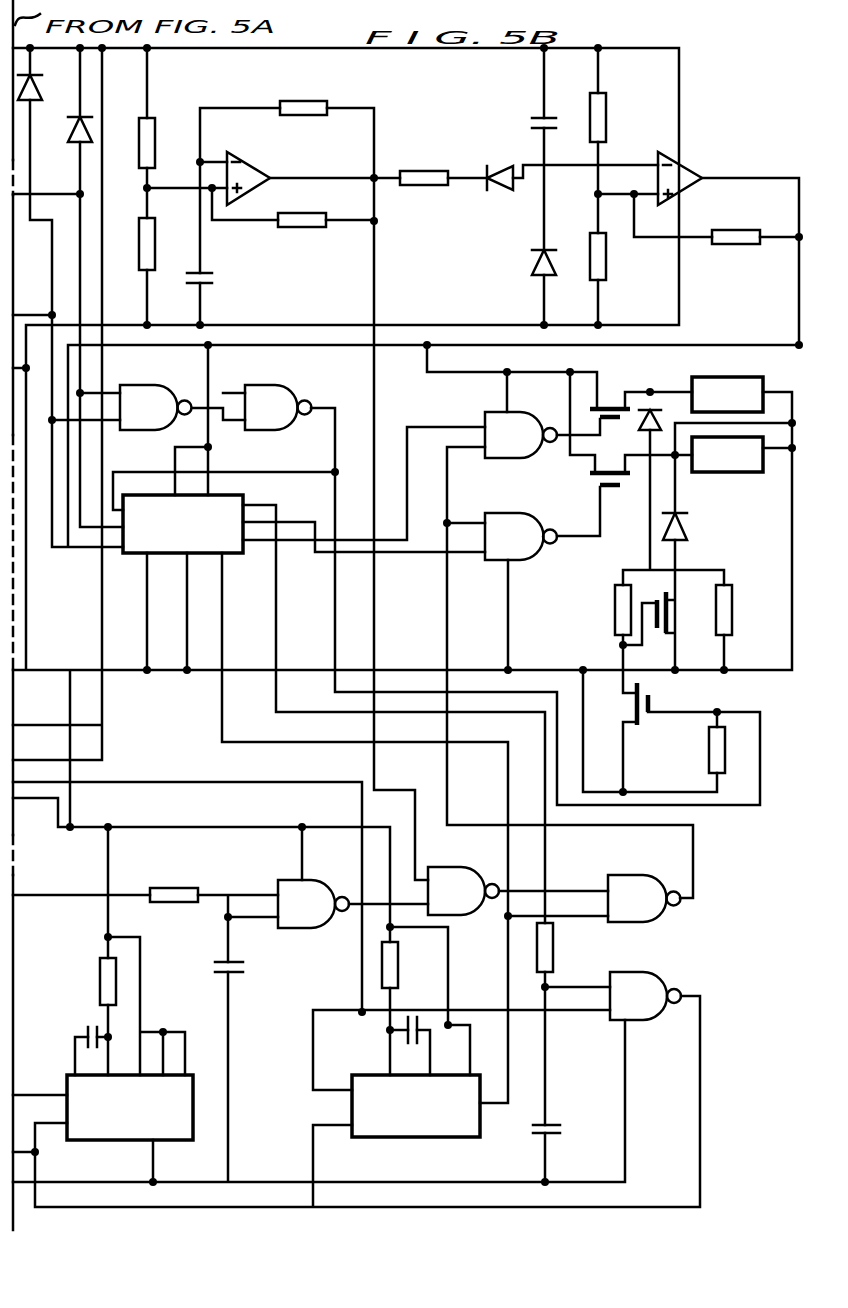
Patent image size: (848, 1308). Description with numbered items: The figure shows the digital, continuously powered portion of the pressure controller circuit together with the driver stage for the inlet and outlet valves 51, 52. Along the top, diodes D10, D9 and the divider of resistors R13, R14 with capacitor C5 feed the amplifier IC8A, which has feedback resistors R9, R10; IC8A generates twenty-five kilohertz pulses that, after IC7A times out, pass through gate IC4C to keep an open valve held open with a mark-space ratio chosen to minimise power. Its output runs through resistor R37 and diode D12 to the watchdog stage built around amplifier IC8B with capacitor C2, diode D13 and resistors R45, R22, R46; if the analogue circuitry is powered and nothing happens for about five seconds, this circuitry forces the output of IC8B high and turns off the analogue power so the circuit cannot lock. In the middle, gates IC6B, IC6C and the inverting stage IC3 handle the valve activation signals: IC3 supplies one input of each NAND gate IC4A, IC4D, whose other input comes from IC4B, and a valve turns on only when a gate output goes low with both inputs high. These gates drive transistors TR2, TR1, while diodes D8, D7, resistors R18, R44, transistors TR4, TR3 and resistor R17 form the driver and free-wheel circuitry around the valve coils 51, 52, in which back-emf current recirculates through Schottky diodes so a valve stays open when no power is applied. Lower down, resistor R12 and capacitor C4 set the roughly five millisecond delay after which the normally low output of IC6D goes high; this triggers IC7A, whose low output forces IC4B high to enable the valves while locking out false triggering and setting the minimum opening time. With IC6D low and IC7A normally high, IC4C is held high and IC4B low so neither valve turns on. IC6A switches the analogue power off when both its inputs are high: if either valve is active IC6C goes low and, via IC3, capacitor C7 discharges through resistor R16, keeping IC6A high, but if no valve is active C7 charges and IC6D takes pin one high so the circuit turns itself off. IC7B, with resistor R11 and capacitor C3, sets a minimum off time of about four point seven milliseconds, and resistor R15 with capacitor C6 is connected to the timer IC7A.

The inlet valve 51 is at (712, 375).
The outlet valve 52 is at (733, 474).
The diode D10 is at (45, 78).
The diode D9 is at (64, 143).
The resistor R13 is at (162, 131).
The resistor R14 is at (162, 234).
The capacitor C5 is at (212, 282).
The pulse generator IC8A is at (256, 168).
The resistor R9 is at (303, 96).
The resistor R10 is at (302, 233).
The resistor R37 is at (424, 191).
The diode D12 is at (507, 190).
The capacitor C2 is at (531, 112).
The diode D13 is at (523, 263).
The resistor R45 is at (619, 117).
The resistor R22 is at (617, 256).
The watchdog circuit IC8B is at (692, 169).
The resistor R46 is at (737, 249).
The NAND gate IC6B is at (155, 395).
The logic gate IC6C is at (278, 393).
The inverter stage IC3 is at (183, 524).
The NAND gate IC4A is at (492, 423).
The NAND gate IC4D is at (508, 524).
The transistor TR2 is at (612, 391).
The diode D8 is at (636, 428).
The transistor TR1 is at (614, 489).
The diode D7 is at (689, 526).
The resistor R18 is at (600, 610).
The transistor TR4 is at (681, 612).
The resistor R44 is at (743, 610).
The transistor TR3 is at (659, 712).
The resistor R17 is at (700, 752).
The delay resistor R12 is at (174, 880).
The delay gate IC6D is at (290, 891).
The NAND gate IC4C is at (463, 879).
The NAND gate IC4B is at (640, 885).
The resistor R11 is at (84, 981).
The capacitor C3 is at (79, 1026).
The delay capacitor C4 is at (246, 969).
The resistor R15 is at (410, 965).
The discharge resistor R16 is at (568, 947).
The power-off gate IC6A is at (645, 983).
The capacitor C6 is at (406, 1043).
The timing capacitor C7 is at (555, 1117).
The minimum off-time timer IC7B is at (130, 1107).
The lockout timer IC7A is at (416, 1106).